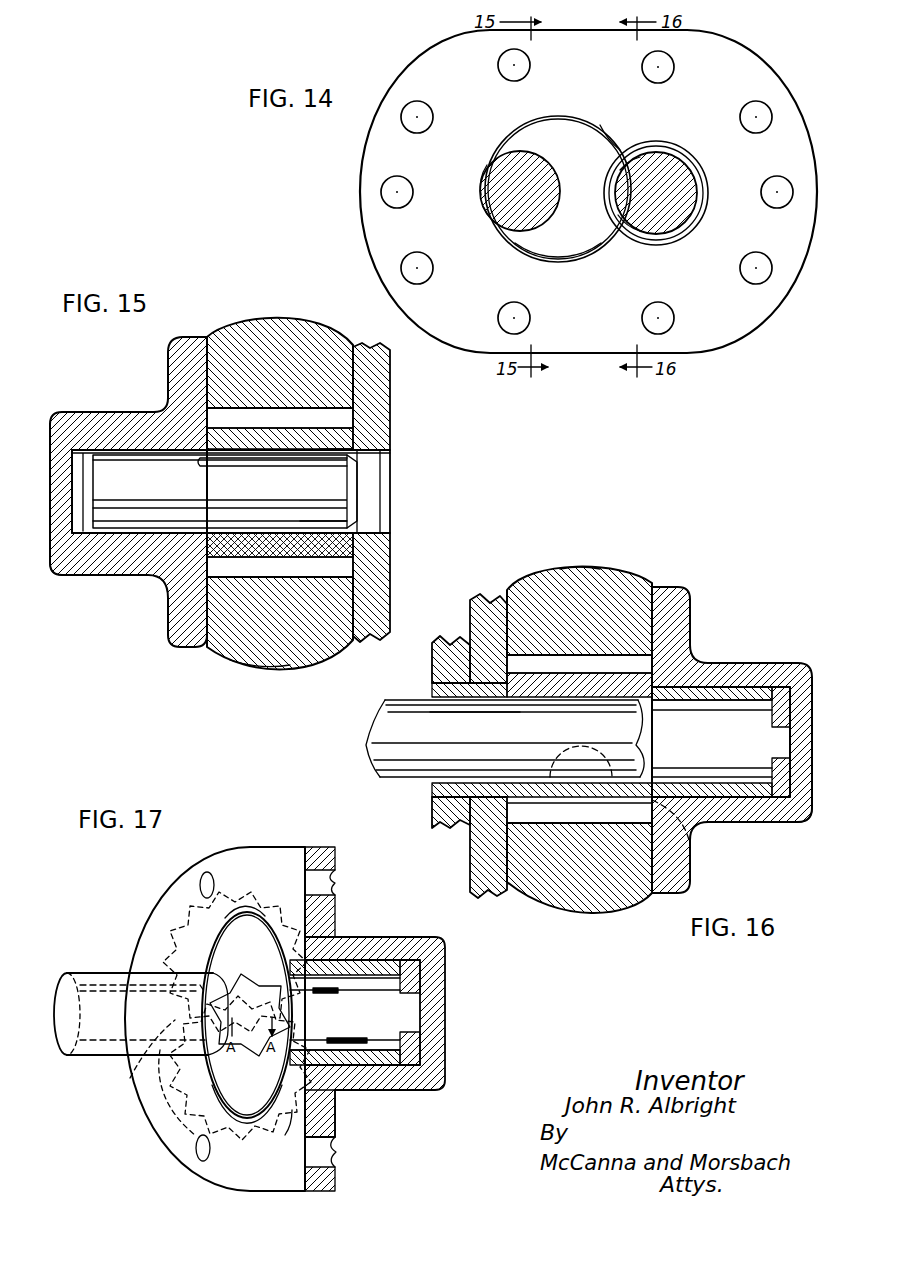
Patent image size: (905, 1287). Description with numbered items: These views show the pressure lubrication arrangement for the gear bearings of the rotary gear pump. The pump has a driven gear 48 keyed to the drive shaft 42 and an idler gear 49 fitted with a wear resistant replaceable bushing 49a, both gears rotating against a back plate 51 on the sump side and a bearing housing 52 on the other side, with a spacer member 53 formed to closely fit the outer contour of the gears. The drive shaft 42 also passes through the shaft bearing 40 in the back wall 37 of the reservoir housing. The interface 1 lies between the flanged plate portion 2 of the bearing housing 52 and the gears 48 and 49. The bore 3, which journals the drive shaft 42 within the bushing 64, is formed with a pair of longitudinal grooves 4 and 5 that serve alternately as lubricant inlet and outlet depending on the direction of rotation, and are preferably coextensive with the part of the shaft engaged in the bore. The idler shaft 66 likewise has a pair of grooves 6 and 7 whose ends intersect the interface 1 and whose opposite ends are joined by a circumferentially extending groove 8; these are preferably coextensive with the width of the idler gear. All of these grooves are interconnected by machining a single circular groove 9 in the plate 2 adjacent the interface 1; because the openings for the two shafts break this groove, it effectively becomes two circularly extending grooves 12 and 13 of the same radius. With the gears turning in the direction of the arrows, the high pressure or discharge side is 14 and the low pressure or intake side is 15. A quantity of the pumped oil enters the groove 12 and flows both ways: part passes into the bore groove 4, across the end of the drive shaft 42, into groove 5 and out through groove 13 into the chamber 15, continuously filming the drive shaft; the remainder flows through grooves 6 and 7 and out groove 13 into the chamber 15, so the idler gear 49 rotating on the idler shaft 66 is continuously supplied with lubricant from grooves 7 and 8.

In FIG. 15, the interface 1 is at (209, 332).
In FIG. 16, the interface 1 is at (654, 580).
In FIG. 14, the plate portion 2 is at (421, 80).
In FIG. 15, the plate portion 2 is at (167, 375).
In FIG. 16, the plate portion 2 is at (682, 605).
In FIG. 17, the bore 3 is at (362, 1025).
In FIG. 14, the longitudinal groove 4 is at (629, 164).
In FIG. 16, the longitudinal groove 4 is at (705, 712).
In FIG. 17, the longitudinal groove 4 is at (385, 1000).
In FIG. 14, the longitudinal groove 5 is at (625, 224).
In FIG. 16, the longitudinal groove 5 is at (728, 778).
In FIG. 17, the longitudinal groove 5 is at (340, 1042).
In FIG. 14, the groove 6 is at (489, 161).
In FIG. 15, the groove 6 is at (290, 462).
In FIG. 17, the groove 6 is at (97, 983).
In FIG. 14, the groove 7 is at (496, 215).
In FIG. 15, the groove 7 is at (312, 522).
In FIG. 17, the groove 7 is at (105, 1047).
In FIG. 15, the circumferentially extending groove 8 is at (352, 506).
In FIG. 17, the circumferentially extending groove 8 is at (60, 1005).
In FIG. 14, the circular groove 9 is at (607, 125).
In FIG. 17, the circular groove 9 is at (228, 912).
In FIG. 14, the circularly extending groove 12 is at (576, 117).
In FIG. 15, the circularly extending groove 12 is at (206, 427).
In FIG. 16, the circularly extending groove 12 is at (657, 663).
In FIG. 17, the circularly extending groove 12 is at (252, 910).
In FIG. 14, the circularly extending groove 13 is at (583, 263).
In FIG. 15, the circularly extending groove 13 is at (196, 556).
In FIG. 16, the circularly extending groove 13 is at (688, 847).
In FIG. 17, the circularly extending groove 13 is at (247, 1122).
In FIG. 17, the high pressure side 14 is at (238, 905).
In FIG. 17, the low pressure side 15 is at (262, 1135).
In FIG. 16, the back wall 37 is at (440, 813).
In FIG. 16, the shaft bearing 40 is at (478, 690).
In FIG. 14, the drive shaft 42 is at (699, 181).
In FIG. 16, the drive shaft 42 is at (406, 713).
In FIG. 16, the driven gear 48 is at (512, 685).
In FIG. 17, the driven gear 48 is at (330, 1122).
In FIG. 15, the idler gear 49 is at (343, 557).
In FIG. 17, the idler gear 49 is at (165, 1125).
In FIG. 15, the replaceable bushing 49a is at (352, 447).
In FIG. 15, the back plate 51 is at (378, 617).
In FIG. 16, the back plate 51 is at (498, 893).
In FIG. 15, the bearing housing 52 is at (81, 574).
In FIG. 16, the bearing housing 52 is at (757, 824).
In FIG. 15, the spacer member 53 is at (252, 651).
In FIG. 16, the spacer member 53 is at (594, 574).
In FIG. 17, the spacer member 53 is at (290, 1150).
In FIG. 14, the bushing 64 is at (688, 157).
In FIG. 17, the bushing 64 is at (375, 962).
In FIG. 14, the idler shaft 66 is at (487, 192).
In FIG. 15, the idler shaft 66 is at (370, 492).